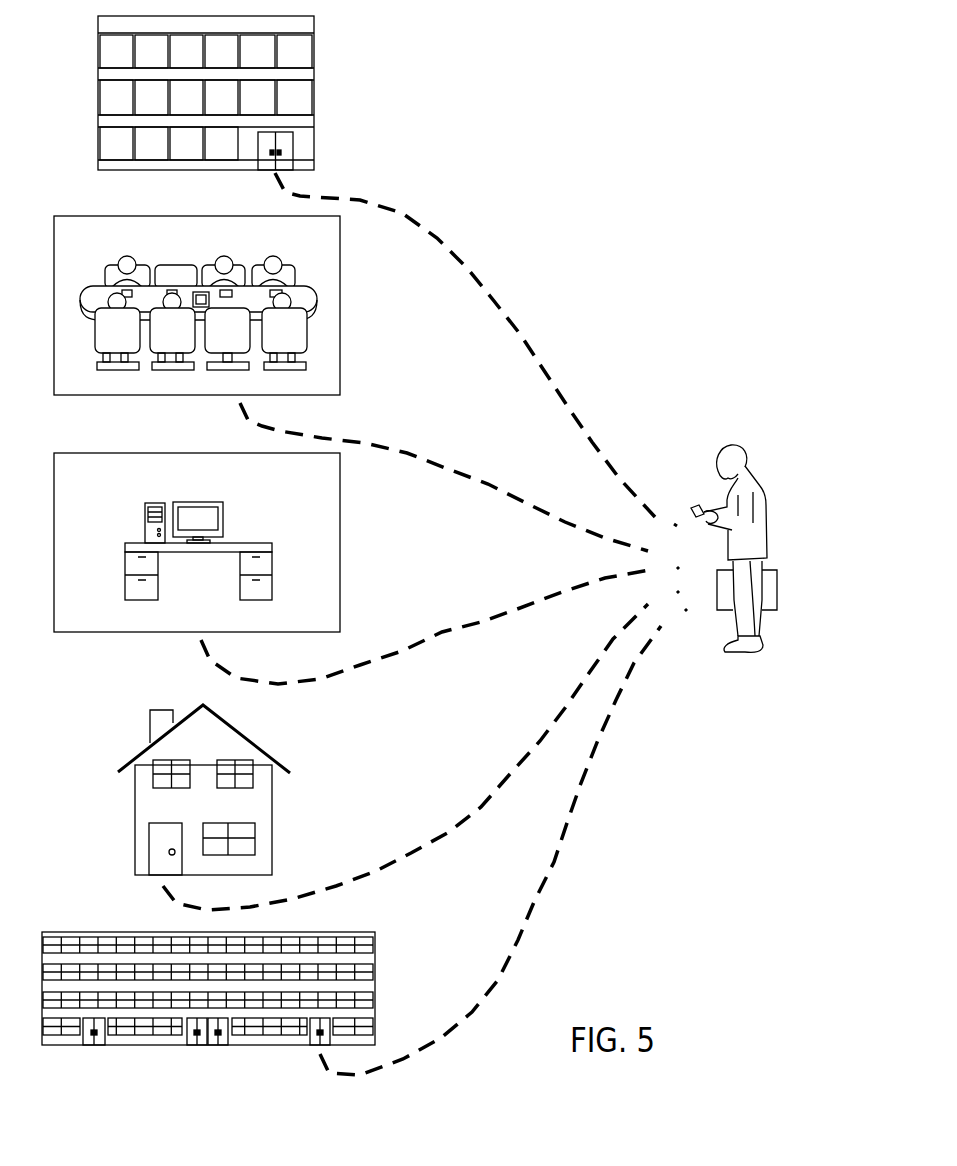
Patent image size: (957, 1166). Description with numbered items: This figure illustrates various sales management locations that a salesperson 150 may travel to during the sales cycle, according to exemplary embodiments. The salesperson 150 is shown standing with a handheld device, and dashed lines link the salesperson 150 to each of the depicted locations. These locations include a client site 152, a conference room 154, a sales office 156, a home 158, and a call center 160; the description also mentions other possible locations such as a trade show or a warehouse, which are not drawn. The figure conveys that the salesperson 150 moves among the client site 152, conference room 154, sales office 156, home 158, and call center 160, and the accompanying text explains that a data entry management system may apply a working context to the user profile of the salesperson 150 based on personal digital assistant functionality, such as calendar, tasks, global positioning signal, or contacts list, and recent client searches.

The salesperson 150 is at (740, 445).
The client site 152 is at (314, 25).
The conference room 154 is at (340, 271).
The sales office 156 is at (340, 523).
The home 158 is at (272, 795).
The call center 160 is at (375, 957).